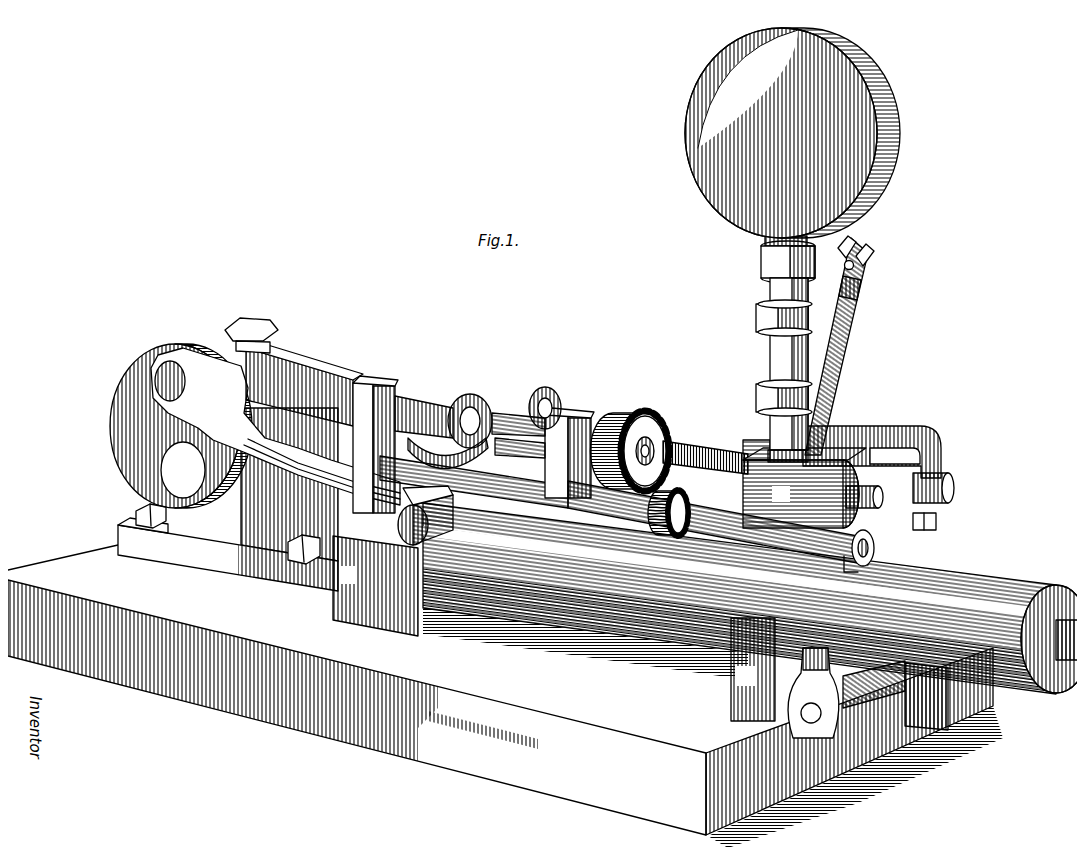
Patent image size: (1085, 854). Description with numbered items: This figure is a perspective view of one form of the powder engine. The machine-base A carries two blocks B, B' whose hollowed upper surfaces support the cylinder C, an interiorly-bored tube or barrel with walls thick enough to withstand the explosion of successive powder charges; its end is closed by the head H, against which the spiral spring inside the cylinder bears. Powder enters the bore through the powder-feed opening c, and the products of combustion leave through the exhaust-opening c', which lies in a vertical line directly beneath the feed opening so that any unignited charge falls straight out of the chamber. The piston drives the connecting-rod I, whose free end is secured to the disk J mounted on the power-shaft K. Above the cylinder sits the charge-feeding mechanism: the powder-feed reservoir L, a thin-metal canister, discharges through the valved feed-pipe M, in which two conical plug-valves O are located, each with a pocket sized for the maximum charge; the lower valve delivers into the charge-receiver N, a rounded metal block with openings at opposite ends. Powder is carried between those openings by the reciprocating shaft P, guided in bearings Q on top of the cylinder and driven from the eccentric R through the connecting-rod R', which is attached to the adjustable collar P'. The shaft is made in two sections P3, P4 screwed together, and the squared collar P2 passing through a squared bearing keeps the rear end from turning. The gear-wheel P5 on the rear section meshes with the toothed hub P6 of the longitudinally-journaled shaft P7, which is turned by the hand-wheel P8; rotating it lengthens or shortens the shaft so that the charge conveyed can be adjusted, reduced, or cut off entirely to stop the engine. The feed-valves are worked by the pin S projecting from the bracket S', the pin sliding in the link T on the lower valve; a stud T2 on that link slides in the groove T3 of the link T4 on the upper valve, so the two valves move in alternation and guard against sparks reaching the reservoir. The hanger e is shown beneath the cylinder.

The machine-base A is at (505, 696).
The block B is at (375, 586).
The block B' is at (753, 669).
The cylinder C is at (750, 598).
The head H is at (1060, 606).
The connecting-rod I is at (275, 426).
The disk J is at (181, 426).
The power-shaft K is at (150, 476).
The powder-feed reservoir L is at (872, 182).
The valved feed-pipe M is at (775, 349).
The charge-receiver N is at (813, 488).
The conical plug-valves O is at (750, 384).
The reciprocating shaft P is at (518, 441).
The adjustable collar P' is at (472, 403).
The squared collar P2 is at (420, 400).
The shaft section P3 is at (540, 394).
The shaft section P4 is at (712, 525).
The gear-wheel P5 is at (662, 422).
The toothed hub P6 is at (685, 496).
The longitudinally-journaled shaft P7 is at (722, 440).
The hand-wheel P8 is at (870, 545).
The bearings Q is at (372, 376).
The eccentric R is at (294, 372).
The connecting-rod R' is at (454, 453).
The pin S is at (756, 445).
The bracket S' is at (878, 453).
The link T is at (829, 329).
The stud T2 is at (856, 262).
The groove T3 is at (850, 242).
The link T4 is at (845, 290).
The powder-feed opening c is at (433, 511).
The exhaust-opening c' is at (474, 482).
The hanger e is at (868, 693).